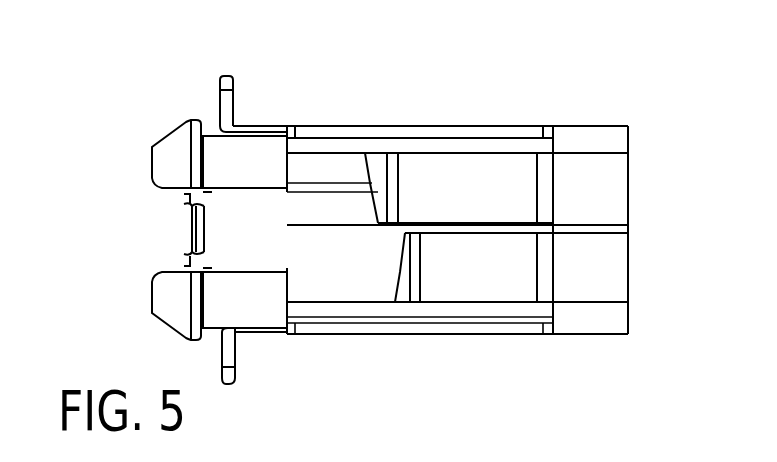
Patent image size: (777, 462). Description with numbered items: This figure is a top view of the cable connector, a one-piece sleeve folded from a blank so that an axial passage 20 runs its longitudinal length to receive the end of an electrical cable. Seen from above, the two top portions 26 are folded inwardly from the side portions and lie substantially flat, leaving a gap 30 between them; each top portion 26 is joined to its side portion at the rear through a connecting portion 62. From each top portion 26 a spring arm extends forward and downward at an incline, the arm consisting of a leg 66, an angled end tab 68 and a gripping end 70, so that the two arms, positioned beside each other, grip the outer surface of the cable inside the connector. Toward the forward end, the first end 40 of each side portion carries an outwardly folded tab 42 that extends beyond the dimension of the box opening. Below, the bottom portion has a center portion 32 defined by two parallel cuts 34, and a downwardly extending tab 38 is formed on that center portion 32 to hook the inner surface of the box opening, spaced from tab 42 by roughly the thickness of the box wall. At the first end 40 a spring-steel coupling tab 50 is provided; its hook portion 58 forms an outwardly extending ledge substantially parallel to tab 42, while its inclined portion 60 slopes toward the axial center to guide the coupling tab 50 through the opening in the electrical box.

The coupling tab 50 is at (152, 136).
The hook portion 58 is at (212, 122).
The inclined portion 60 is at (165, 158).
The outwardly folded tab 42 is at (228, 76).
The first end 40 is at (244, 122).
The downwardly extending tab 38 is at (178, 228).
The axial passage 20 is at (236, 220).
The center portion 32 is at (272, 240).
The parallel cuts 34 is at (312, 188).
The gripping end 70 is at (365, 160).
The angled end tab 68 is at (378, 168).
The leg 66 is at (490, 166).
The connecting portion 62 is at (617, 142).
The top portion 26 is at (612, 190).
The gap 30 is at (620, 228).